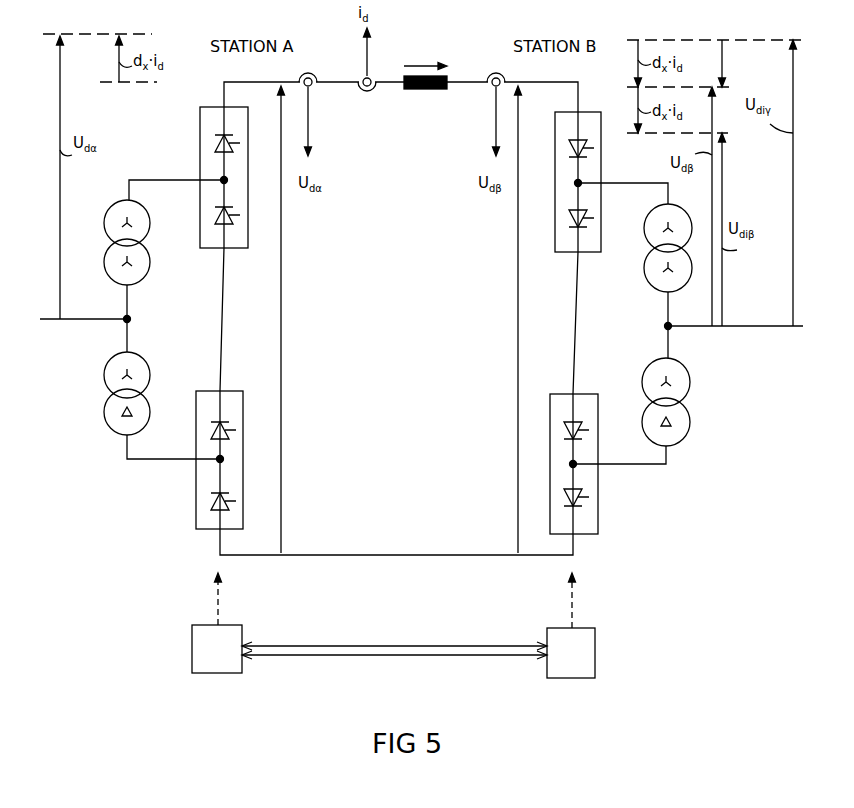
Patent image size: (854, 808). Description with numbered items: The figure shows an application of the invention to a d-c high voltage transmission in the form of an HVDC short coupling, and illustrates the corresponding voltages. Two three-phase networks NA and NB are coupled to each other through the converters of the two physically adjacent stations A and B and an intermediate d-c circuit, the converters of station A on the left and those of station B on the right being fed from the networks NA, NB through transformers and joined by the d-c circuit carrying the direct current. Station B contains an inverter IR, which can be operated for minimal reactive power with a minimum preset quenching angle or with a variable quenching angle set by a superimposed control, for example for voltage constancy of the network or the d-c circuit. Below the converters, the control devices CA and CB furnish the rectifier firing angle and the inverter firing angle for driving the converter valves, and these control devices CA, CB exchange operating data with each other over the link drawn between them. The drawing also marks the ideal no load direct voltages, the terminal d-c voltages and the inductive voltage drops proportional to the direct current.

The network NA is at (70, 322).
The network NB is at (755, 328).
The control device CA is at (192, 659).
The control device CB is at (595, 657).
The inverter IR is at (550, 268).